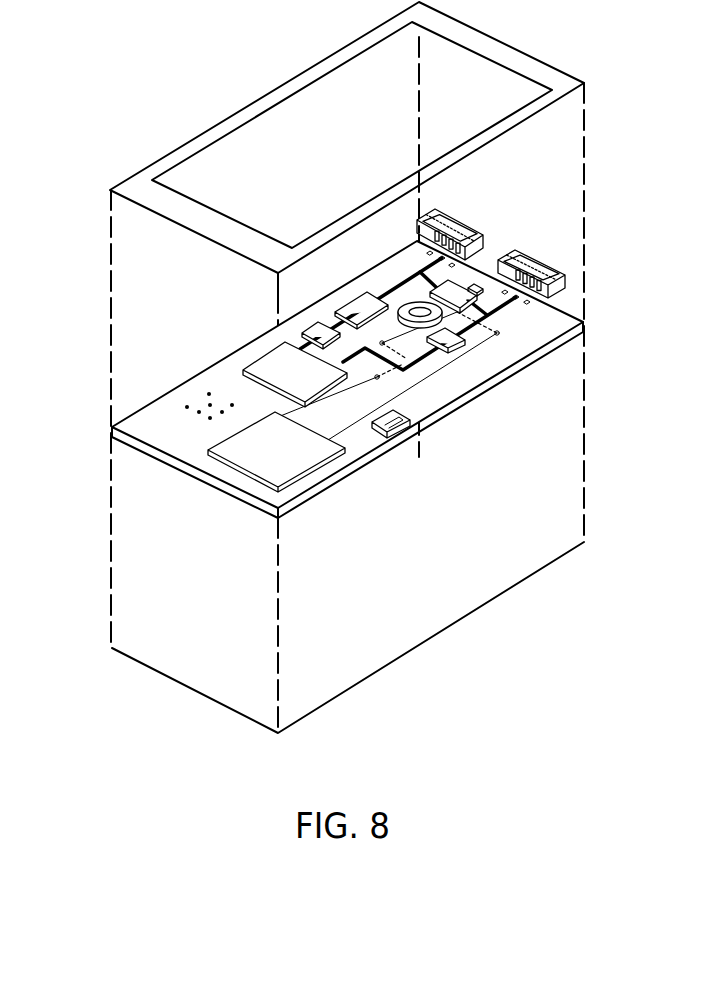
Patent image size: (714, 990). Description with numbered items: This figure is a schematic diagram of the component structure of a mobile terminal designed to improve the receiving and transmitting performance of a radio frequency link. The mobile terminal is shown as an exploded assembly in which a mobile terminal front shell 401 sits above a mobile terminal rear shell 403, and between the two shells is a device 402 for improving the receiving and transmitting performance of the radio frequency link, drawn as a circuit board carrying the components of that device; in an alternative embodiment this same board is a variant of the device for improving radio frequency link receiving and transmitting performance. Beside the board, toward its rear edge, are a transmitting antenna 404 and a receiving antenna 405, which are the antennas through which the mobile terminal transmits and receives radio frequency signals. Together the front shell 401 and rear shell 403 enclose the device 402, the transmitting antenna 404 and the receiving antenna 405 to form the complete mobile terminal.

The mobile terminal front shell 401 is at (508, 53).
The device for improving receiving and transmitting performance of a radio frequency 402 is at (122, 441).
The mobile terminal rear shell 403 is at (492, 585).
The transmitting antenna 404 is at (458, 225).
The receiving antenna 405 is at (548, 262).